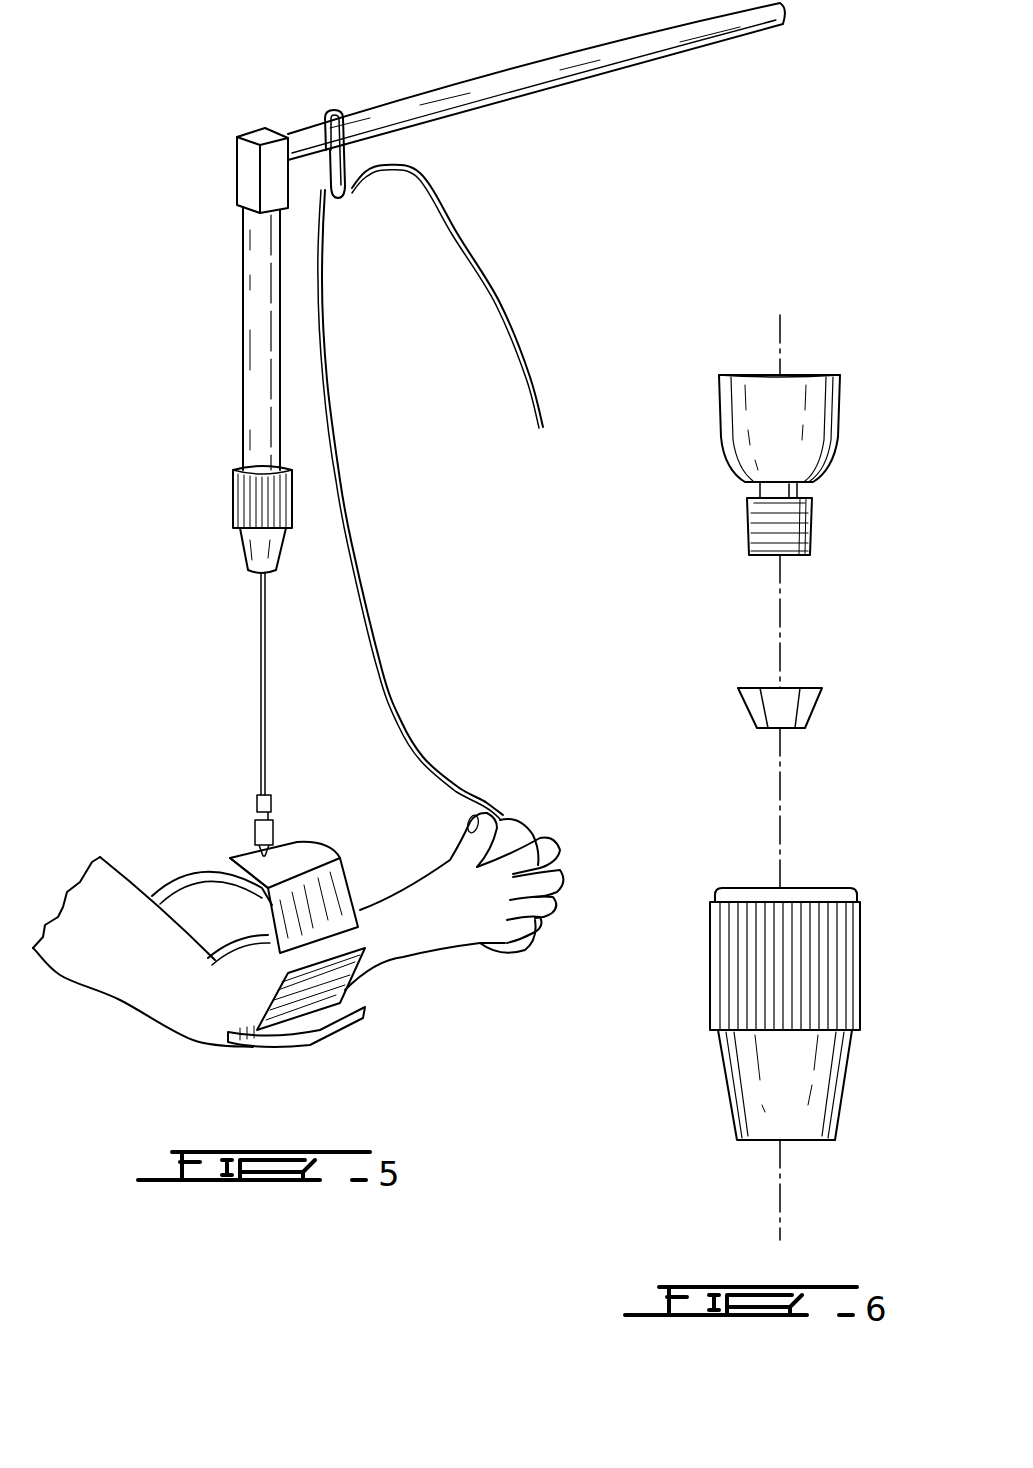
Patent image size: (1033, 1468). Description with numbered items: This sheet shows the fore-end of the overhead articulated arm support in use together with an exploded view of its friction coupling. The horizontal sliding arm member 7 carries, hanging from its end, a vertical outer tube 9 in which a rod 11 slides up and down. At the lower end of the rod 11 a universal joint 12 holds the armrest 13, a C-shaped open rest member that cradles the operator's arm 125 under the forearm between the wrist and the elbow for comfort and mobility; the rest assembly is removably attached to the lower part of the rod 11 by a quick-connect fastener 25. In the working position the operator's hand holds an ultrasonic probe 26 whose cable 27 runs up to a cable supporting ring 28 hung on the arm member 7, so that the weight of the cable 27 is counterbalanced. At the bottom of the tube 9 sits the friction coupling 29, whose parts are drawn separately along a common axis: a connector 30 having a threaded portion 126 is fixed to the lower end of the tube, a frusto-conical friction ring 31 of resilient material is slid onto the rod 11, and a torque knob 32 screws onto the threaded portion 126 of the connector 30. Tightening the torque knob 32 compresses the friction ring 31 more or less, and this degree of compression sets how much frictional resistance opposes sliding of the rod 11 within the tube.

In FIG. 5, the sliding arm member 7 is at (643, 47).
In FIG. 5, the vertical support pole 9 is at (245, 325).
In FIG. 5, the rod 11 is at (262, 680).
In FIG. 5, the universal joint 12 is at (297, 840).
In FIG. 5, the armrest 13 is at (175, 888).
In FIG. 5, the quick-connect fastener 25 is at (255, 803).
In FIG. 5, the ultrasonic probe 26 is at (513, 830).
In FIG. 5, the cable 27 is at (383, 668).
In FIG. 5, the cable supporting ring 28 is at (355, 152).
In FIG. 5, the friction coupling 29 is at (235, 505).
In FIG. 6, the connector 30 is at (735, 430).
In FIG. 6, the friction ring 31 is at (750, 705).
In FIG. 6, the torque knob 32 is at (720, 975).
In FIG. 5, the operator's arm 125 is at (162, 1003).
In FIG. 6, the threaded portion 126 is at (752, 540).